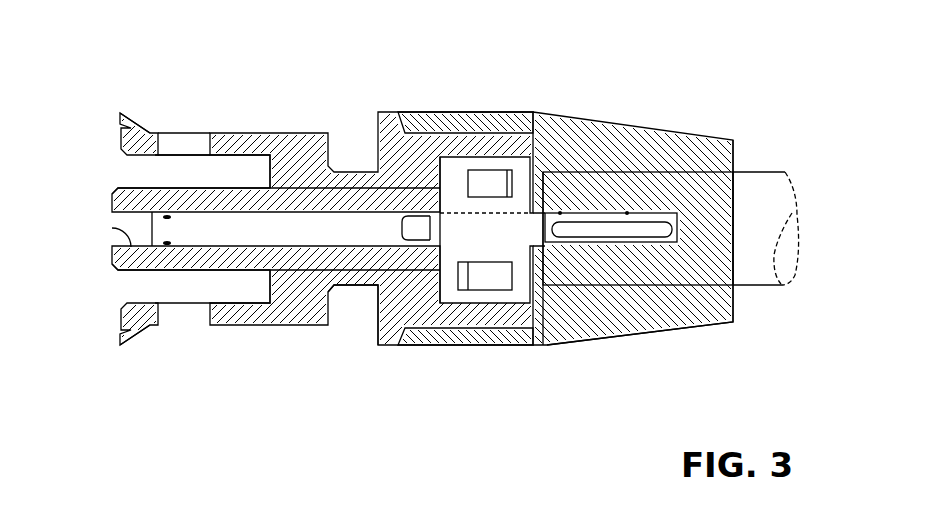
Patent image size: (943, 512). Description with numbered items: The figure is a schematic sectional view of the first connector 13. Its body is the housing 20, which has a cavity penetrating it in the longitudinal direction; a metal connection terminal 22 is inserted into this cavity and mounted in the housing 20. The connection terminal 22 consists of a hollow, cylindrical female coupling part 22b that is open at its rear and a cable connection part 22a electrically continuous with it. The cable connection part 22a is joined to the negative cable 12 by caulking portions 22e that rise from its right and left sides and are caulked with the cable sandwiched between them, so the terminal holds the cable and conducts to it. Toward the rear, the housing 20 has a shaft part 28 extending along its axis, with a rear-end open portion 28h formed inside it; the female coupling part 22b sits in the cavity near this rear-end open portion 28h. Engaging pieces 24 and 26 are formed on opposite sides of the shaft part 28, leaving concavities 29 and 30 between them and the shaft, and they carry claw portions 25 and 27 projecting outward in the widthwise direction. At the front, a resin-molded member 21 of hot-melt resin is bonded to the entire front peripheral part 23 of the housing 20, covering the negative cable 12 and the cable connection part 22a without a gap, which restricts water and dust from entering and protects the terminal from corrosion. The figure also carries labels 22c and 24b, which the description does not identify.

The negative cable 12 is at (763, 170).
The first connector 13 is at (503, 86).
The housing 20 is at (306, 131).
The resin-molded member 21 is at (562, 210).
The connection terminal 22 is at (167, 328).
The cable connection part 22a is at (686, 332).
The female coupling part 22b is at (292, 328).
The seal / sealing bore 22c is at (628, 212).
The caulking portions 22e is at (573, 212).
The front peripheral part 23 is at (436, 112).
The engaging piece 24 is at (118, 137).
The latch arm recess 24b is at (200, 147).
The claw portion 25 is at (131, 112).
The engaging piece 26 is at (116, 322).
The claw portion 27 is at (131, 347).
The shaft part 28 is at (110, 191).
The rear-end open portion 28h is at (108, 231).
The concavity 29 is at (268, 172).
The concavity 30 is at (265, 286).